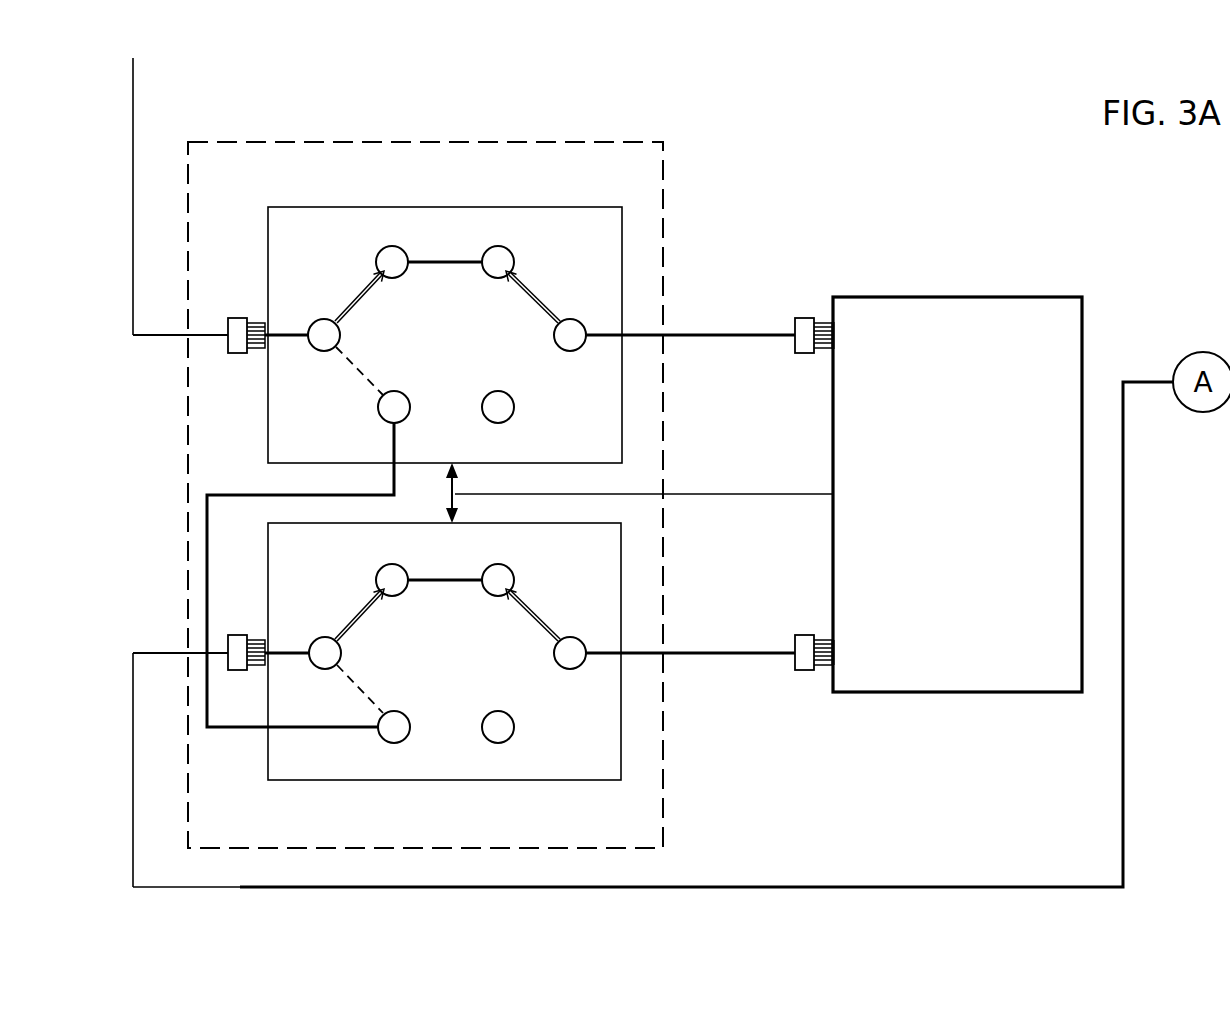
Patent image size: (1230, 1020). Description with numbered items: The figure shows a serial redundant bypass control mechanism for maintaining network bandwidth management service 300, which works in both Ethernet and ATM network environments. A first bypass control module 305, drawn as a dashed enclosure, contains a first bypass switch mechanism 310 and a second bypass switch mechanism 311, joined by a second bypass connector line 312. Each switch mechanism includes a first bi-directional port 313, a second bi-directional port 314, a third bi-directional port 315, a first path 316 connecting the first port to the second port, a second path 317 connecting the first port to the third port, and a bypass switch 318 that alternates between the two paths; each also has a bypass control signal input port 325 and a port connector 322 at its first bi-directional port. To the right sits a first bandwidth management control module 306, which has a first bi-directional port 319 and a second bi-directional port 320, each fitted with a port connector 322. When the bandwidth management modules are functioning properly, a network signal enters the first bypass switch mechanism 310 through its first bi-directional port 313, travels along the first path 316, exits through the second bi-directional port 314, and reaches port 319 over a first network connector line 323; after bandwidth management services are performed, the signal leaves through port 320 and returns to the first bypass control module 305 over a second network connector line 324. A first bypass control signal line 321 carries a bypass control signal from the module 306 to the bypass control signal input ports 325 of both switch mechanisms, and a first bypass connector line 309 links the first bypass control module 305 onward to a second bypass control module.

The serial redundant bypass control mechanism for maintaining network bandwidth mana 300 is at (851, 150).
The first bypass control module 305 is at (507, 142).
The first bandwidth management control module 306 is at (1005, 297).
The first bypass connector line 309 is at (790, 884).
The first bypass switch mechanism 310 is at (622, 240).
The second bypass switch mechanism 311 is at (622, 708).
The second bypass connector line 312 is at (207, 584).
The first bi-directional port 313 is at (275, 340).
The second bi-directional port 314 is at (613, 330).
The third bi-directional port 315 is at (390, 455).
The first path 316 is at (462, 270).
The second path 317 is at (368, 385).
The bypass switch 318 is at (347, 300).
The first bi-directional port 319 is at (835, 336).
The second bi-directional port 320 is at (835, 652).
The first bypass control signal line 321 is at (757, 492).
The port connectors 322 is at (238, 318).
The first network connector line 323 is at (757, 338).
The second network connector line 324 is at (755, 648).
The bypass control signal input port 325 is at (453, 463).